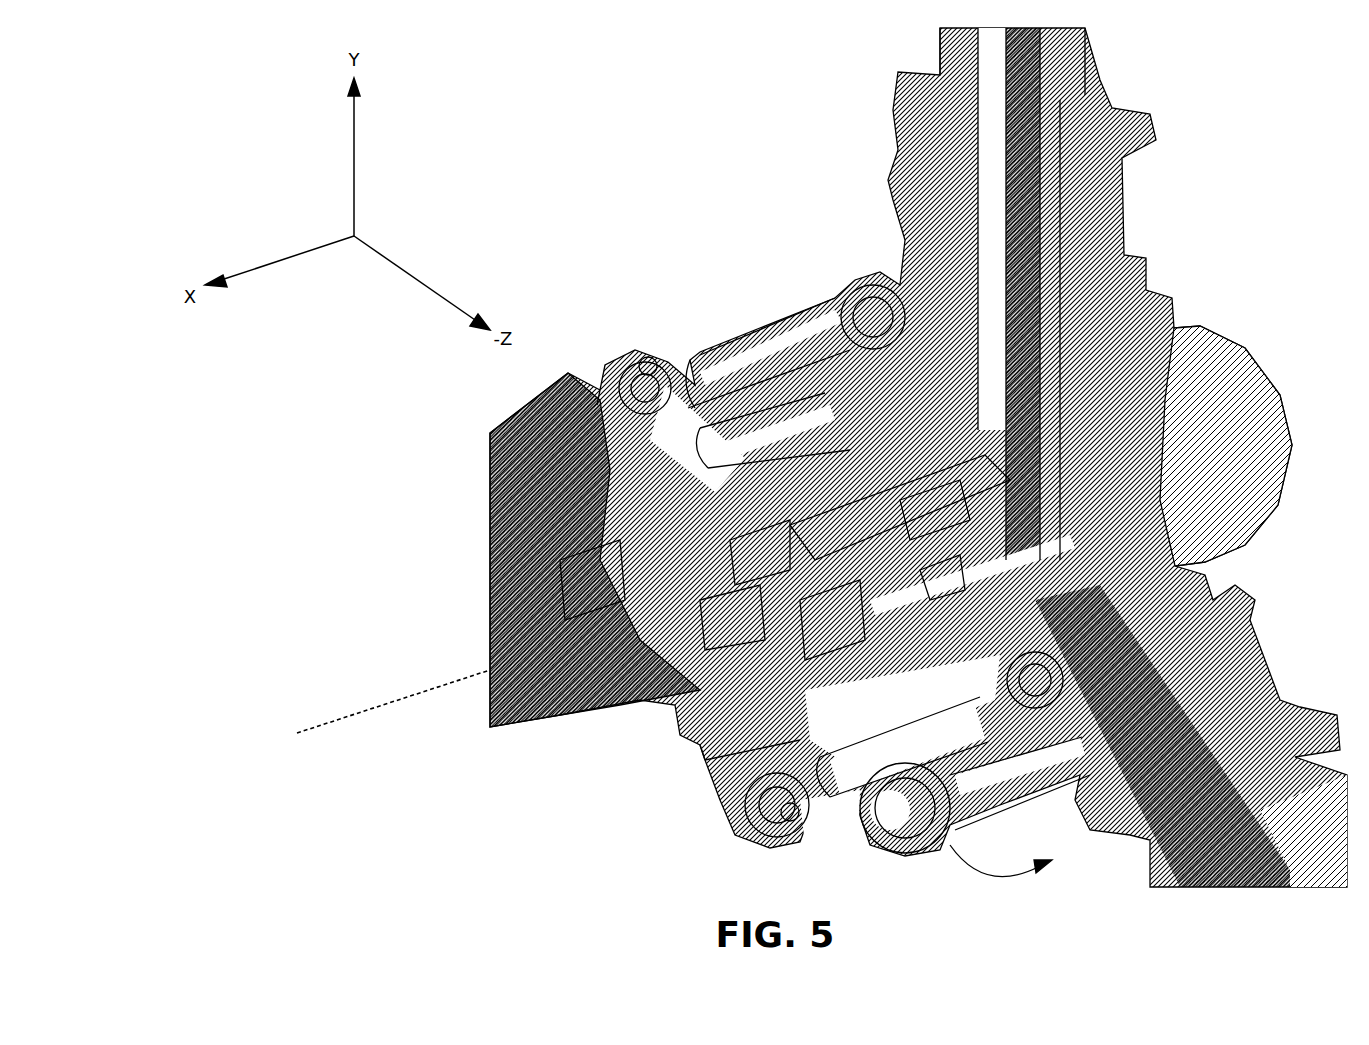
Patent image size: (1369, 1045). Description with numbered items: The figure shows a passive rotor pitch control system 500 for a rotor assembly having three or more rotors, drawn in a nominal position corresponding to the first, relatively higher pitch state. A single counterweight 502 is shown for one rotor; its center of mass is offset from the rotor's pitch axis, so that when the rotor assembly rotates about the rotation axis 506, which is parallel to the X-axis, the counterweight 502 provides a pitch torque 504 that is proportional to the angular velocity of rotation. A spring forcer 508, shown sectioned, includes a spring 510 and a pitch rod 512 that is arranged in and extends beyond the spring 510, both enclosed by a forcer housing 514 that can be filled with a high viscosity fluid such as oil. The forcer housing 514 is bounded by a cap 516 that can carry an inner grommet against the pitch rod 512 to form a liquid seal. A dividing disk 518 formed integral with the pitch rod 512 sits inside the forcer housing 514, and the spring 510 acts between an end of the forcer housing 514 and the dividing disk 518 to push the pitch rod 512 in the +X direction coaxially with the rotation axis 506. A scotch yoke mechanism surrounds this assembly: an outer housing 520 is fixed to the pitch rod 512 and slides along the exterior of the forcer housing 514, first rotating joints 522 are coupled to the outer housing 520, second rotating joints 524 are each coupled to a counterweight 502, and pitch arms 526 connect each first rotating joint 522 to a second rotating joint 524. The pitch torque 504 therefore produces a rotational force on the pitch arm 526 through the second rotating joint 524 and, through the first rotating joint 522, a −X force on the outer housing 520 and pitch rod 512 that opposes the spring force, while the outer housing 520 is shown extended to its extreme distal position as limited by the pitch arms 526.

The passive rotor pitch control system 500 is at (570, 134).
The counterweight 502 is at (780, 432).
The pitch torque 504 is at (1005, 882).
The rotation axis 506 is at (387, 703).
The spring forcer 508 is at (582, 516).
The spring 510 is at (861, 497).
The pitch rod 512 is at (936, 512).
The forcer housing 514 is at (930, 583).
The cap 516 is at (730, 615).
The dividing disk 518 is at (757, 551).
The outer housing 520 is at (583, 584).
The first rotating joint 522 is at (627, 374).
The second rotating joint 524 is at (869, 292).
The pitch arm 526 is at (759, 350).